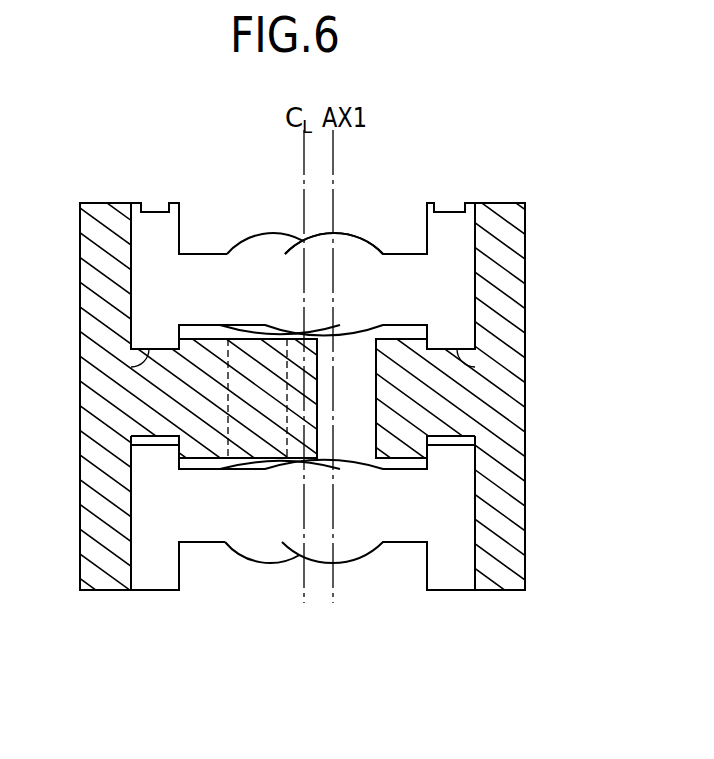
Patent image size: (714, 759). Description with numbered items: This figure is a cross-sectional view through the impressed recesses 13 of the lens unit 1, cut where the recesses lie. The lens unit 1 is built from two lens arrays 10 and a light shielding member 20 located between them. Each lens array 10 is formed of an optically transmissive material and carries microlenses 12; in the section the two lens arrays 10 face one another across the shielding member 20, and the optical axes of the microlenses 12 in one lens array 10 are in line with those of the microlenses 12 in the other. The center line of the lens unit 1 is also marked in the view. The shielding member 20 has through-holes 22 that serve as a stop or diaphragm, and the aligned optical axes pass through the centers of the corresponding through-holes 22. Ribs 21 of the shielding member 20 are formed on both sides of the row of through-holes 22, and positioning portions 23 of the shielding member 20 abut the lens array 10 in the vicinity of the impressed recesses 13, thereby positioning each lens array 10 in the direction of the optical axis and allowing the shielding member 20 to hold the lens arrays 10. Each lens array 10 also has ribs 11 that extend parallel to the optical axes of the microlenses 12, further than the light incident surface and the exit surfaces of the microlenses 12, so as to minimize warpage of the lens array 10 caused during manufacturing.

The lens unit 1 is at (593, 172).
The lens array 10 is at (131, 232).
The rib 11 is at (179, 223).
The microlens 12 is at (369, 242).
The impressed recess 13 is at (152, 209).
The light shielding member 20 is at (80, 265).
The rib 21 is at (97, 307).
The through-hole 22 is at (380, 406).
The positioning portion 23 is at (152, 349).